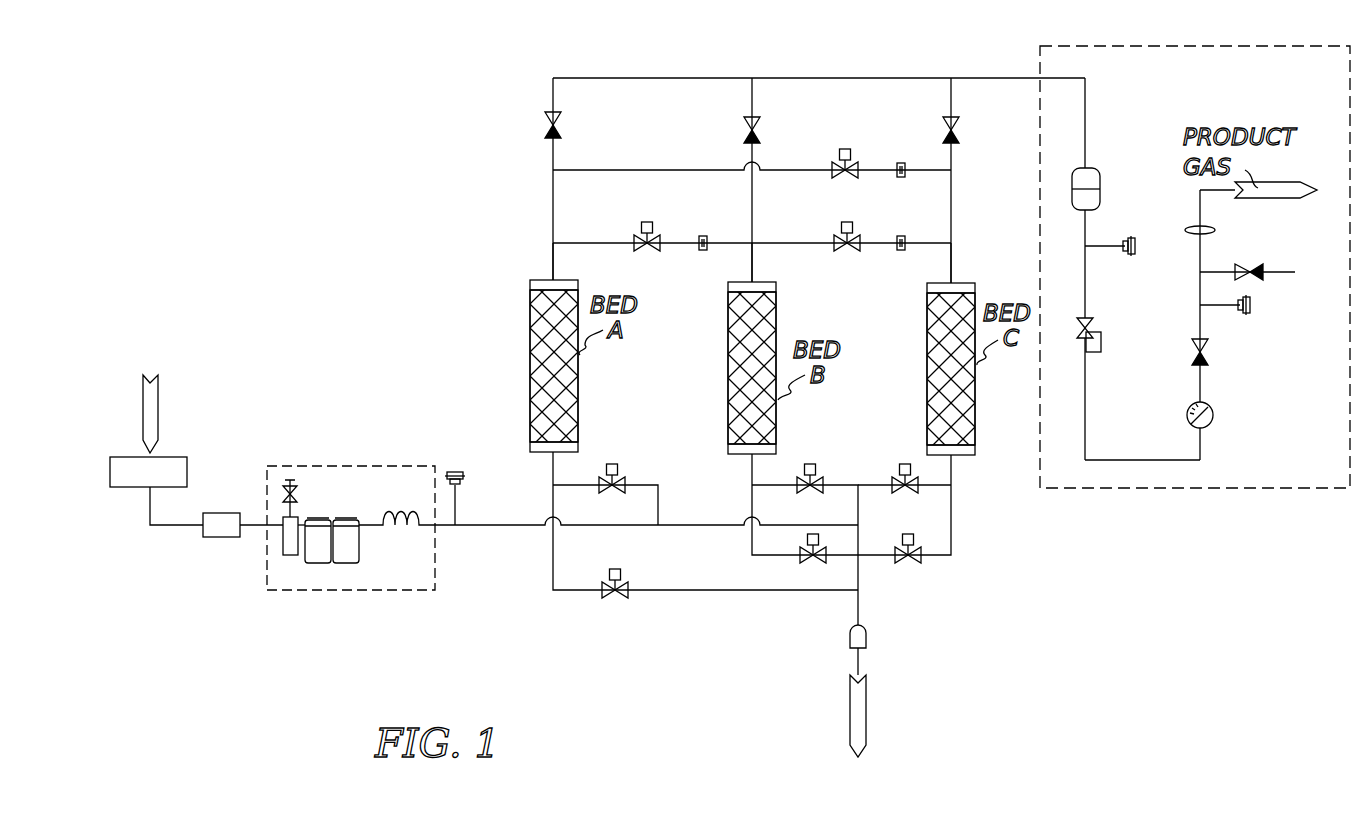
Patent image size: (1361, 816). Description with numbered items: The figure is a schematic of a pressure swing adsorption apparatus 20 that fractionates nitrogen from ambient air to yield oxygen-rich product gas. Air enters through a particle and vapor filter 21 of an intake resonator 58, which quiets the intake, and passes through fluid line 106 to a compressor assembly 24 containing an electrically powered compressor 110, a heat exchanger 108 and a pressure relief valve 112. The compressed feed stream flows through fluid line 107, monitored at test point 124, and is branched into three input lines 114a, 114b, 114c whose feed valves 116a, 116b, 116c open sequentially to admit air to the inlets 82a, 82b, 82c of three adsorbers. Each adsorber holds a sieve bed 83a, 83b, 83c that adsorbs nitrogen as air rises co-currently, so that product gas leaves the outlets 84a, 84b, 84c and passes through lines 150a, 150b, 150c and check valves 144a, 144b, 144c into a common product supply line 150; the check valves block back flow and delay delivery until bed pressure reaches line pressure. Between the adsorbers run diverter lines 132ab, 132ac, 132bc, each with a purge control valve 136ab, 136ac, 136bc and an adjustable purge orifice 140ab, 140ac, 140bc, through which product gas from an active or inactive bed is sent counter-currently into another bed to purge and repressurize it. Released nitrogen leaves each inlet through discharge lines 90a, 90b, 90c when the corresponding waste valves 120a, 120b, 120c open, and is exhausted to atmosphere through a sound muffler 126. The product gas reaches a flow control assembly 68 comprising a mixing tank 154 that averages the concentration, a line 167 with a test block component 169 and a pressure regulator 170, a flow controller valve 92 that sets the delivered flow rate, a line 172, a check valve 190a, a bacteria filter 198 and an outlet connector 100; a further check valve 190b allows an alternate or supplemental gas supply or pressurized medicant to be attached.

The pressure swing adsorption apparatus 20 is at (280, 128).
The particle and vapor filter 21 is at (112, 458).
The compressor assembly 24 is at (350, 592).
The intake resonator 58 is at (222, 537).
The flow control assembly 68 is at (1265, 497).
The inlet of first adsorber A 82a is at (553, 460).
The inlet of adsorber B 82b is at (752, 456).
The inlet of adsorber C 82c is at (951, 462).
The sieve bed 83a is at (530, 350).
The sieve bed 83b is at (728, 350).
The sieve bed 83c is at (927, 370).
The outlet of first adsorber A 84a is at (553, 270).
The outlet of adsorber B 84b is at (752, 278).
The outlet of adsorber C 84c is at (951, 272).
The discharge line 90a is at (553, 578).
The discharge line 90b is at (752, 570).
The discharge line 90c is at (951, 555).
The flow controller valve 92 is at (1213, 415).
The outlet connector 100 is at (1265, 182).
The fluid line 106 is at (258, 523).
The fluid line 107 is at (520, 535).
The heat exchanger 108 is at (418, 520).
The compressor 110 is at (360, 540).
The pressure relief valve 112 is at (298, 493).
The input line 114a is at (660, 510).
The input line 114b is at (858, 485).
The input line 114c is at (862, 485).
The feed valve 116a is at (612, 470).
The feed valve 116b is at (810, 470).
The feed valve 116c is at (910, 490).
The waste valve 120a is at (620, 590).
The discharge valve 120b is at (813, 600).
The waste valve 120c is at (908, 570).
The test point 124 is at (455, 470).
The sound muffler 126 is at (866, 636).
The diverter line 132ab is at (553, 243).
The diverter line 132ac is at (705, 152).
The diverter line 132bc is at (930, 240).
The purge control valve 136ab is at (647, 243).
The purge control valve 136ac is at (845, 160).
The purge control valve 136bc is at (857, 266).
The purge orifice 140ab is at (705, 240).
The purge orifice 140ac is at (905, 165).
The purge orifice 140bc is at (901, 252).
The check valve 144a is at (548, 125).
The check valve 144b is at (748, 130).
The check valve 144c is at (958, 120).
The common product supply line 150 is at (840, 78).
The line 150a is at (553, 185).
The line 150b is at (752, 88).
The line 150c is at (951, 95).
The mixing tank 154 is at (1100, 175).
The line 167 is at (1165, 460).
The test block component 169 is at (1128, 238).
The pressure regulator 170 is at (1092, 325).
The line 172 is at (1200, 390).
The check valve 190a is at (1208, 352).
The check valve 190b is at (1250, 277).
The bacteria filter 198 is at (1215, 230).